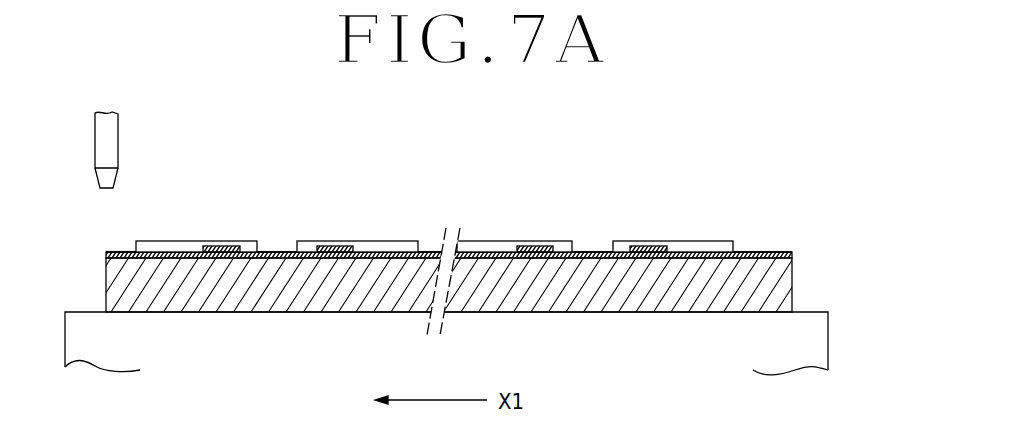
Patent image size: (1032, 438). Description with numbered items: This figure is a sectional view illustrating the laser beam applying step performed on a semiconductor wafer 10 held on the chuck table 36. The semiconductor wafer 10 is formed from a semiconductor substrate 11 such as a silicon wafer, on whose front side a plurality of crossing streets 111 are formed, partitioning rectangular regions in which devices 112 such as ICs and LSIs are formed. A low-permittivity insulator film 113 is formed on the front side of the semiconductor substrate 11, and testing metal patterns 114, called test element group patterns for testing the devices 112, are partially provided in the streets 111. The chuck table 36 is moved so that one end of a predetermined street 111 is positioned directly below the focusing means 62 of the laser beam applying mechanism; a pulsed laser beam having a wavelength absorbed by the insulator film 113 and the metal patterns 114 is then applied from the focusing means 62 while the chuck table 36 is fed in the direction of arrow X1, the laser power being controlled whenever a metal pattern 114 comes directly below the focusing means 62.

The semiconductor wafer 10 is at (468, 244).
The semiconductor substrate 11 is at (792, 285).
The street 111 is at (796, 253).
The device 112 is at (171, 240).
The low-permittivity insulator film 113 is at (125, 251).
The testing metal pattern 114 is at (224, 246).
The chuck table 36 is at (817, 350).
The focusing means 62 is at (107, 140).